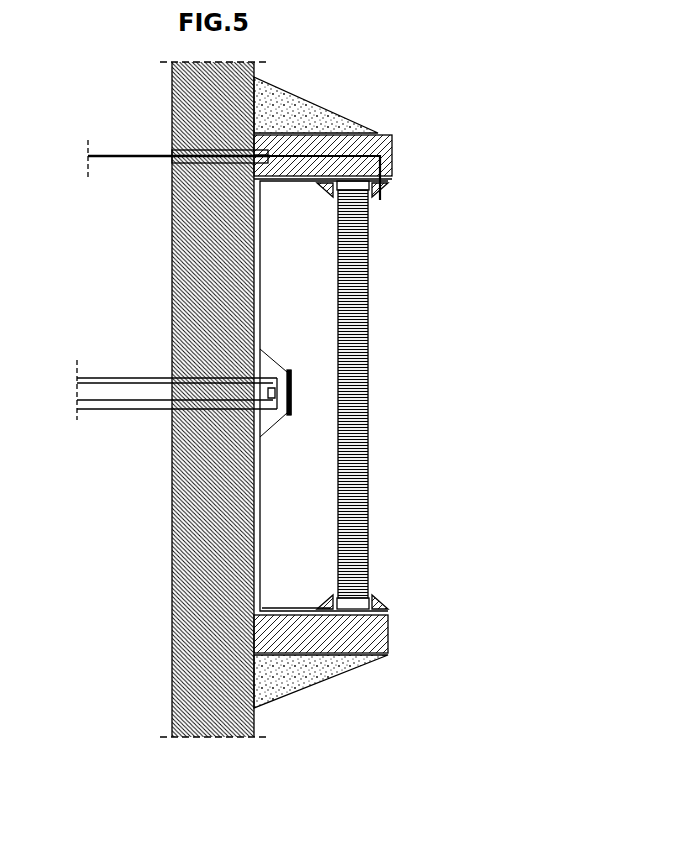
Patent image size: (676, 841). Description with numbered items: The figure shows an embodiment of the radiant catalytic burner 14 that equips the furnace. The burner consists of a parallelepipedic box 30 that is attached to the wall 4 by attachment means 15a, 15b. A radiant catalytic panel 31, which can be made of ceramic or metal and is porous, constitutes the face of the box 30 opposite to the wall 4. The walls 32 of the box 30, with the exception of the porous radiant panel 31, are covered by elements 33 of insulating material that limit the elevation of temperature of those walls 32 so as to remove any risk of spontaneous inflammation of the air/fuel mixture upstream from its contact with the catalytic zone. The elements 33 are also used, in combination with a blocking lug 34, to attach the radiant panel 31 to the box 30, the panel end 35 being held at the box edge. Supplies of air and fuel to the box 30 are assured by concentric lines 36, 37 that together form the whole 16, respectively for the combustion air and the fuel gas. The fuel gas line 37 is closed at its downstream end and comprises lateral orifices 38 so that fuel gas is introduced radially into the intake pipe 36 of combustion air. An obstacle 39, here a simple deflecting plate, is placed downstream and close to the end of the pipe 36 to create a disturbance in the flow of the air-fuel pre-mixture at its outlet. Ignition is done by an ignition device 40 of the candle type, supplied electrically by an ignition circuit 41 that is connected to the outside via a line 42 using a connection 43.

The wall 4 is at (195, 86).
The door assembly 14 is at (414, 427).
The attachment means 15a is at (290, 672).
The attachment means 15b is at (278, 105).
The whole 16 is at (152, 459).
The parallelepipedic box 30 is at (262, 487).
The radiant catalytic panel 31 is at (378, 507).
The walls 32 is at (290, 610).
The elements of insulating material 33 is at (390, 620).
The blocking lug 34 is at (330, 604).
The gasket end 35 is at (357, 612).
The intake pipe of combustion air 36 is at (74, 376).
The line for fuel gas 37 is at (105, 400).
The lateral orifices 38 is at (270, 393).
The obstacle 39 is at (303, 405).
The ignition device 40 is at (390, 208).
The ignition circuit 41 is at (298, 156).
The line 42 is at (140, 154).
The connection 43 is at (253, 163).